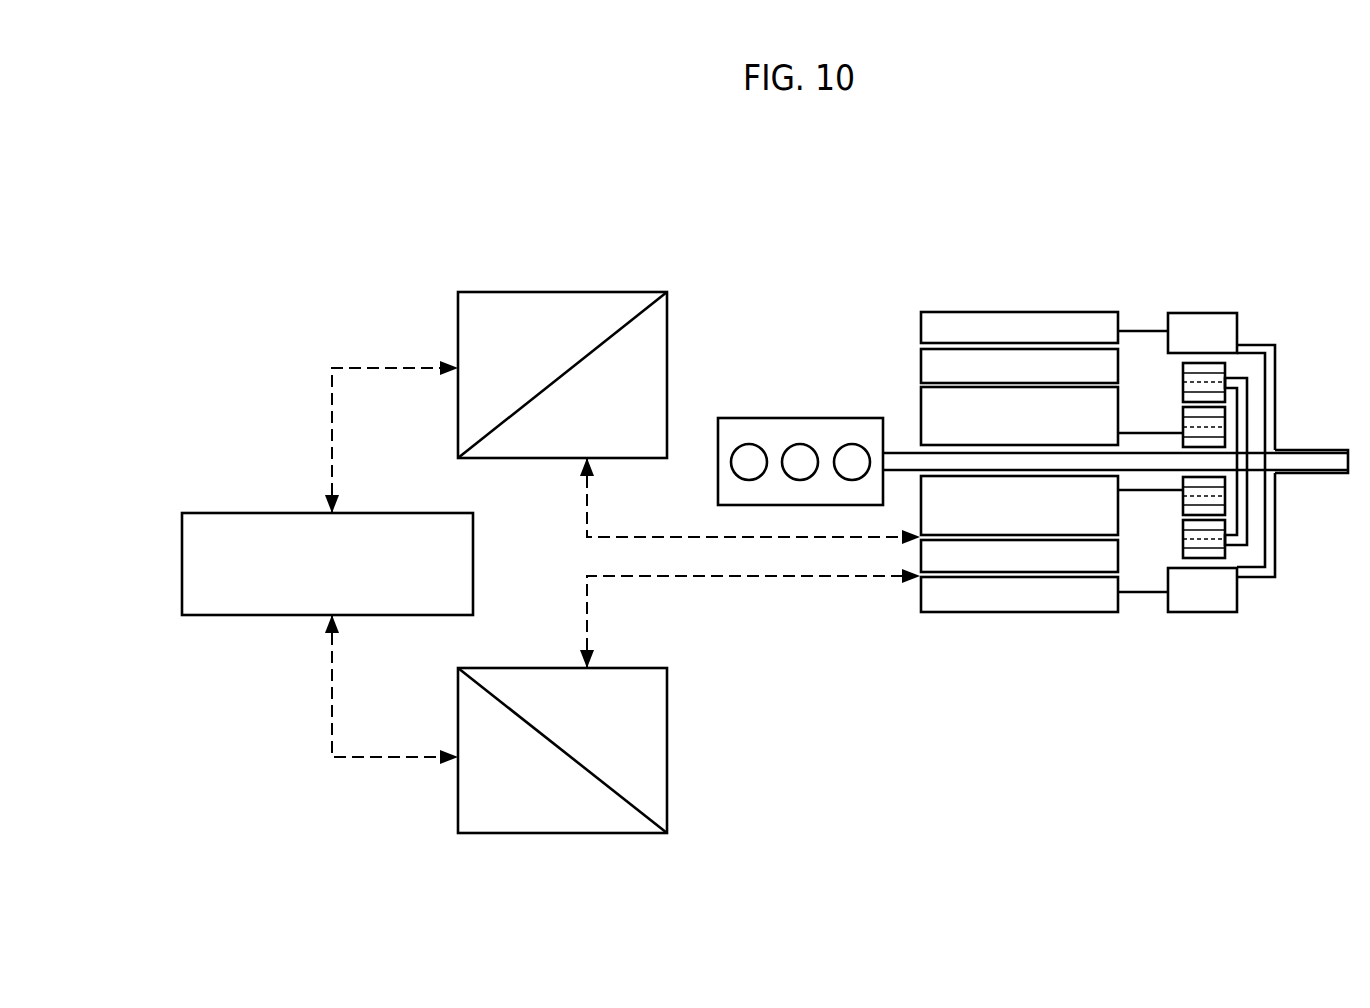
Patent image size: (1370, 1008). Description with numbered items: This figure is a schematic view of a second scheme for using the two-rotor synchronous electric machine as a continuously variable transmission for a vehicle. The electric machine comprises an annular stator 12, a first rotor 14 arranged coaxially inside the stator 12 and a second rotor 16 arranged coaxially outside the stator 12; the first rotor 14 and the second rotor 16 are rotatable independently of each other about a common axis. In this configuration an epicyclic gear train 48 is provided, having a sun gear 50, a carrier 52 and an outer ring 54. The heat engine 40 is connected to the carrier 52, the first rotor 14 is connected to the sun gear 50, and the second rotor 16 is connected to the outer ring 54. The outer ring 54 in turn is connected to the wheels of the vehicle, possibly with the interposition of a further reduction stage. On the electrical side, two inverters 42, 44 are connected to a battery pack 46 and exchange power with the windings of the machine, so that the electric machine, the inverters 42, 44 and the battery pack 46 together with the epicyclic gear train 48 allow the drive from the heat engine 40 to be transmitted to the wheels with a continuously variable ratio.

The stator 12 is at (910, 358).
The first rotor 14 is at (910, 408).
The second rotor 16 is at (915, 308).
The heat engine 40 is at (746, 423).
The inverter 42 is at (522, 292).
The inverter 44 is at (655, 712).
The battery pack 46 is at (224, 601).
The epicyclic gear train 48 is at (1270, 306).
The sun gear 50 is at (1210, 433).
The carrier 52 is at (1243, 402).
The outer ring 54 is at (1185, 322).